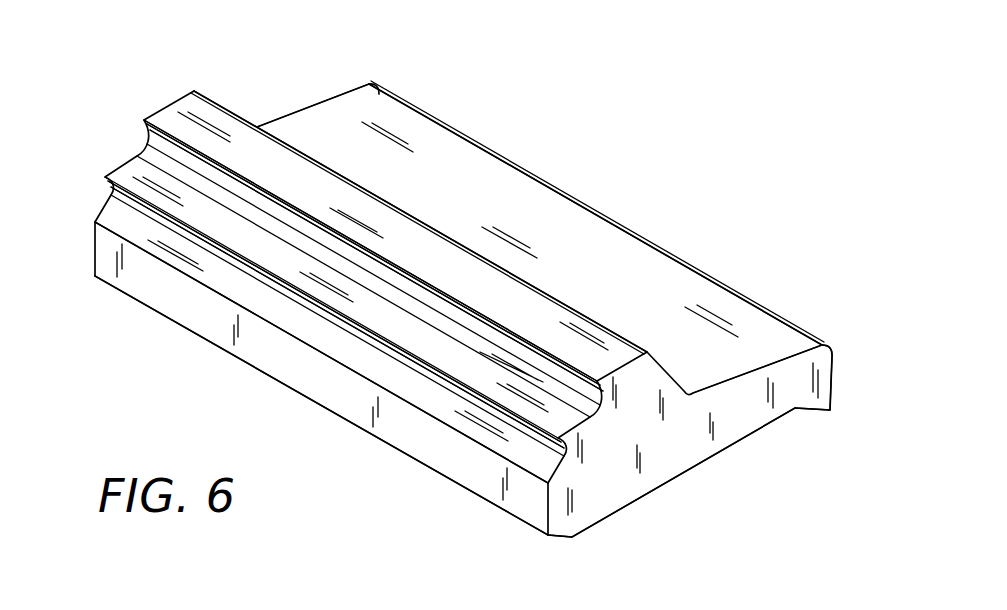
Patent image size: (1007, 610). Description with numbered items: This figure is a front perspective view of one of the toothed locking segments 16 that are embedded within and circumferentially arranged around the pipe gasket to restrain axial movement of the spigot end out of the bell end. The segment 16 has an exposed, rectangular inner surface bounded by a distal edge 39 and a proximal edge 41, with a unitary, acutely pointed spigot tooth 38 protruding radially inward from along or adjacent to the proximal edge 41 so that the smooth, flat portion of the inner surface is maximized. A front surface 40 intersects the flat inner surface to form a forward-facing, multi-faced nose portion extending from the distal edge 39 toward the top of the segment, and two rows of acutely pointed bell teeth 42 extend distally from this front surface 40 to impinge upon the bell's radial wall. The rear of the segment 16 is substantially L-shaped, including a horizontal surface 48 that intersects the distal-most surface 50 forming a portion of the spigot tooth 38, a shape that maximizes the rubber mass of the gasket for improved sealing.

The locking segment 16 is at (138, 62).
The front surface 40 is at (213, 112).
The bell teeth 42 is at (142, 118).
The horizontal surface 48 is at (632, 263).
The distal-most surface 50 is at (833, 382).
The proximal edge 41 is at (830, 412).
The spigot tooth 38 is at (807, 412).
The distal edge 39 is at (571, 539).